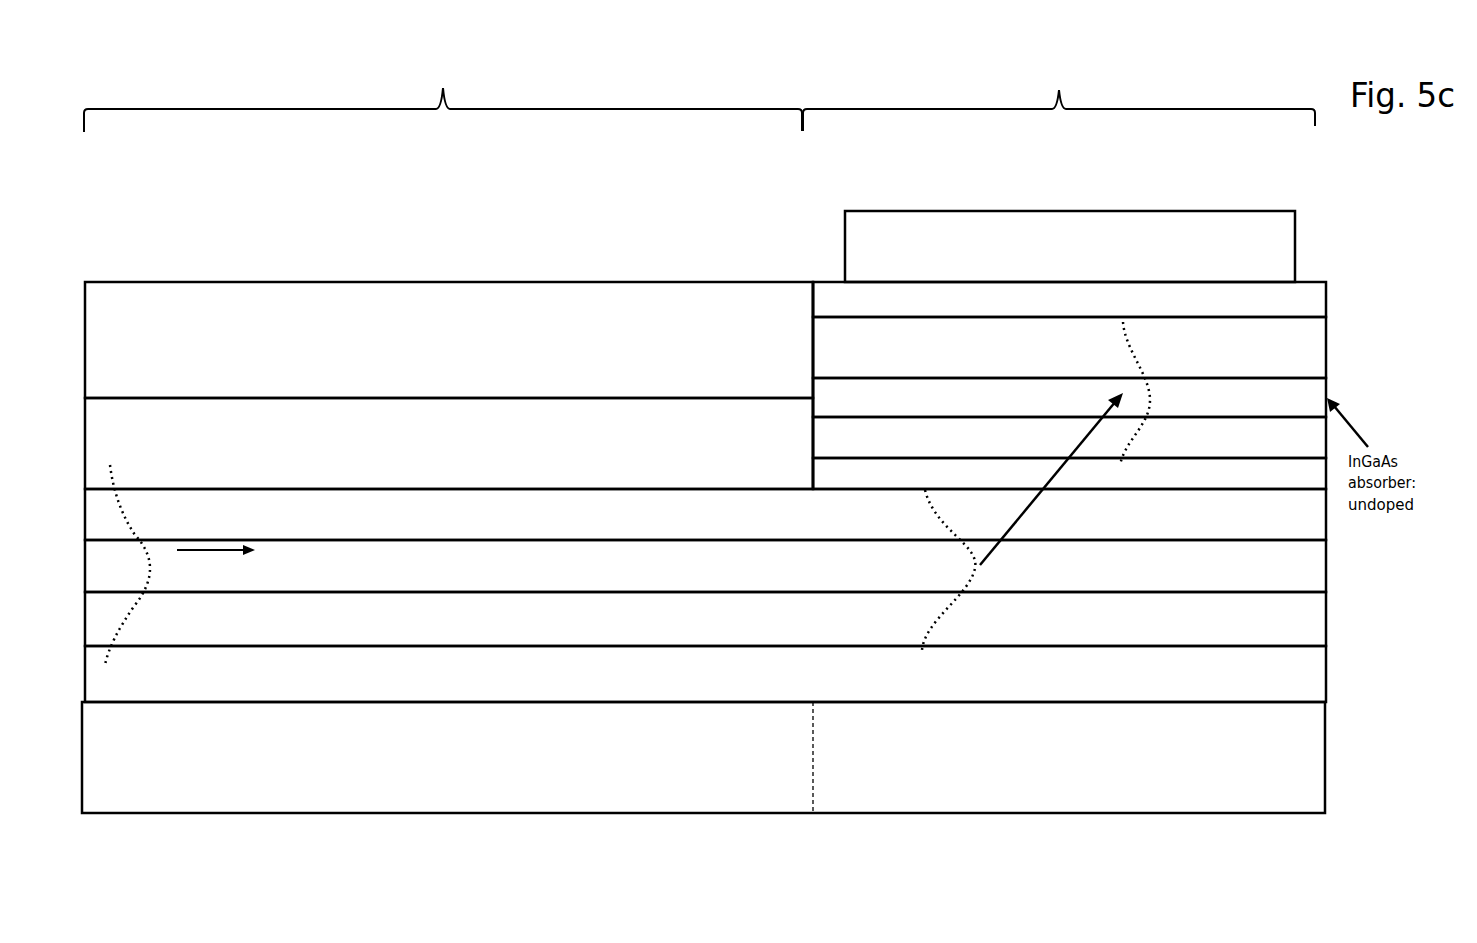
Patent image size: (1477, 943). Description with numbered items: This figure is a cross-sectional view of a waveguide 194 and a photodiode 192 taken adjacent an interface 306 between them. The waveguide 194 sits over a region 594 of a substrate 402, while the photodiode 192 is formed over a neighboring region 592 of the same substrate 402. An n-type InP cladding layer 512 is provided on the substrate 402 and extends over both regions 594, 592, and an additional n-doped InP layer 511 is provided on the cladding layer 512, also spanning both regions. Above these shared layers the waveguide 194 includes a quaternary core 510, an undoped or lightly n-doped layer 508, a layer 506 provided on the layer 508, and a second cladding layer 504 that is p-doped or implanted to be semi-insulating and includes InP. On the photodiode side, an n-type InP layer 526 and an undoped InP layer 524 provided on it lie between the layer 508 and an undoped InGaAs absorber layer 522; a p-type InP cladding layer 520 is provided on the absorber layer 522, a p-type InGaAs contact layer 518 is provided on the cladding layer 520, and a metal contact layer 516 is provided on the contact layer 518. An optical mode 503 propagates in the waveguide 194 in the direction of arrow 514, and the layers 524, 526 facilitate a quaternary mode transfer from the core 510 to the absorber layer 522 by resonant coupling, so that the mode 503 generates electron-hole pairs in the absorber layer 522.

The waveguide 194 is at (443, 95).
The photodiode 192 is at (1059, 94).
The interface 306 is at (812, 280).
The contact layer 516 is at (1070, 246).
The contact layer 518 is at (1069, 299).
The second cladding layer 504 is at (449, 340).
The cladding layer 520 is at (1069, 347).
The absorber layer 522 is at (1069, 397).
The layer 506 is at (449, 443).
The undoped layer 524 is at (1069, 437).
The undoped or n-doped layer 526 is at (1069, 473).
The layer 508 is at (705, 514).
The core 510 is at (705, 566).
The n-doped layer 511 is at (705, 619).
The n-type cladding layer 512 is at (705, 674).
The region 594 is at (447, 757).
The region 592 is at (1069, 757).
The substrate 402 is at (741, 757).
The optical mode 503 is at (127, 515).
The arrow 514 is at (195, 552).